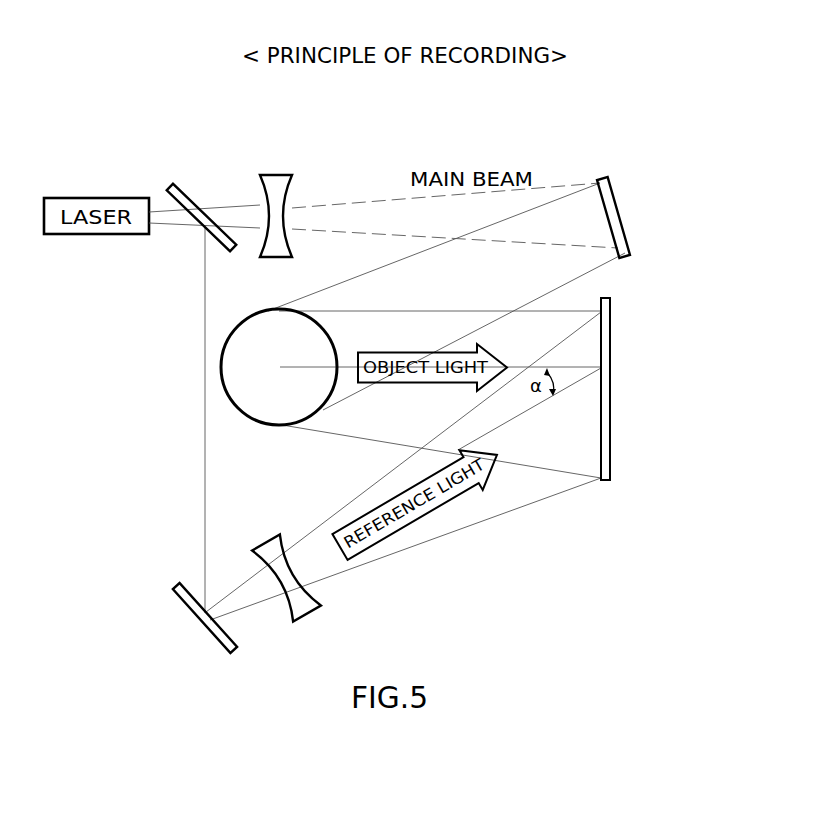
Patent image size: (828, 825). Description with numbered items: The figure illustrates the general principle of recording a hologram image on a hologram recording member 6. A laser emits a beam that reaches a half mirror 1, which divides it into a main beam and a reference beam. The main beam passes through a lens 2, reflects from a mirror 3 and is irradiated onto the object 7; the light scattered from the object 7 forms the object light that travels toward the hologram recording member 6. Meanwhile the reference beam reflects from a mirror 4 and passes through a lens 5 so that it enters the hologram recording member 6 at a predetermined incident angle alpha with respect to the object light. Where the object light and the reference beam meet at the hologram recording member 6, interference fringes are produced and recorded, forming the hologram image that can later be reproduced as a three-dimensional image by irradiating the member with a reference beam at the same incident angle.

The half mirror 1 is at (183, 188).
The lens 2 is at (275, 177).
The mirror 3 is at (618, 214).
The mirror 4 is at (176, 594).
The lens 5 is at (271, 543).
The hologram recording member 6 is at (612, 325).
The object 7 is at (222, 344).